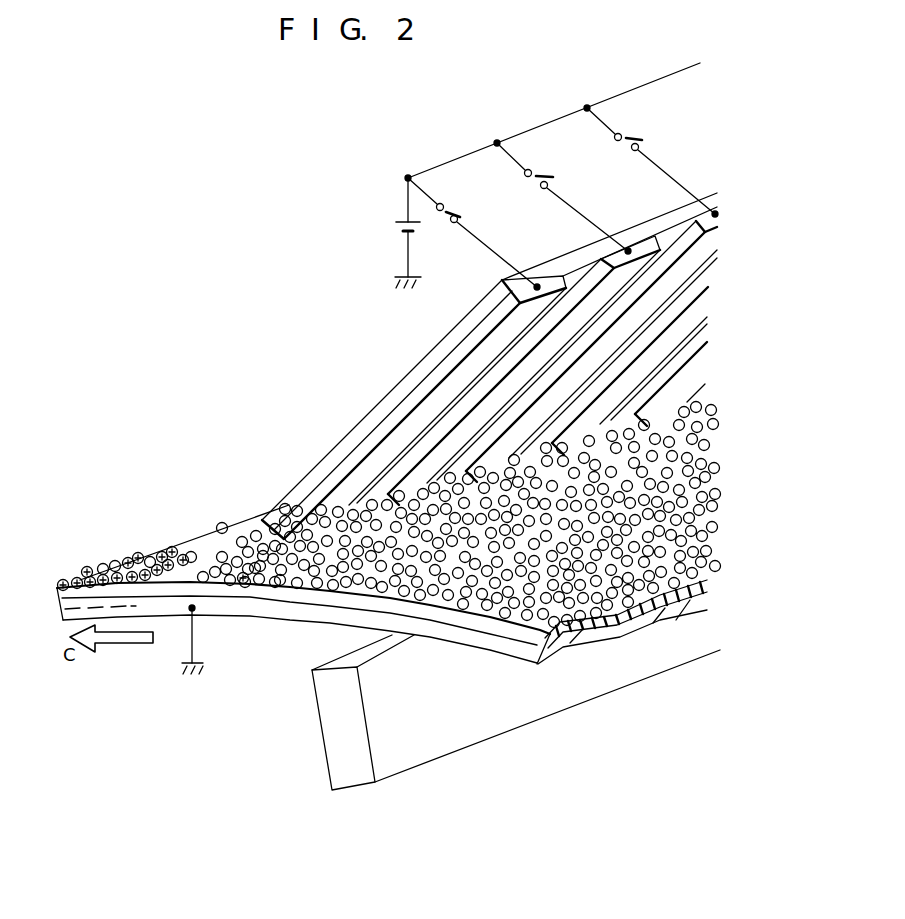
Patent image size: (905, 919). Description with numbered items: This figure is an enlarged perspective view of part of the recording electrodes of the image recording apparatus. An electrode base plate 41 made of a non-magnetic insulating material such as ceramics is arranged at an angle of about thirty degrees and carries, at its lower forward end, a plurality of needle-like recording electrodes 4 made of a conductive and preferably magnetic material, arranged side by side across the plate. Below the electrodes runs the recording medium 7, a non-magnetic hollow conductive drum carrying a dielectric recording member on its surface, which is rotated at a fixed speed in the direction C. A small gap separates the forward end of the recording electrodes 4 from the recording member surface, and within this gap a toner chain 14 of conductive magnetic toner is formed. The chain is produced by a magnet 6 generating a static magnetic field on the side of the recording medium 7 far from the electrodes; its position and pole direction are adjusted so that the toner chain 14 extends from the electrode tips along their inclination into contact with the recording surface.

The recording electrode 4 is at (432, 382).
The electrode base plate 41 is at (357, 425).
The recording medium 7 is at (197, 536).
The toner chain 14 is at (258, 570).
The magnet 6 is at (322, 705).